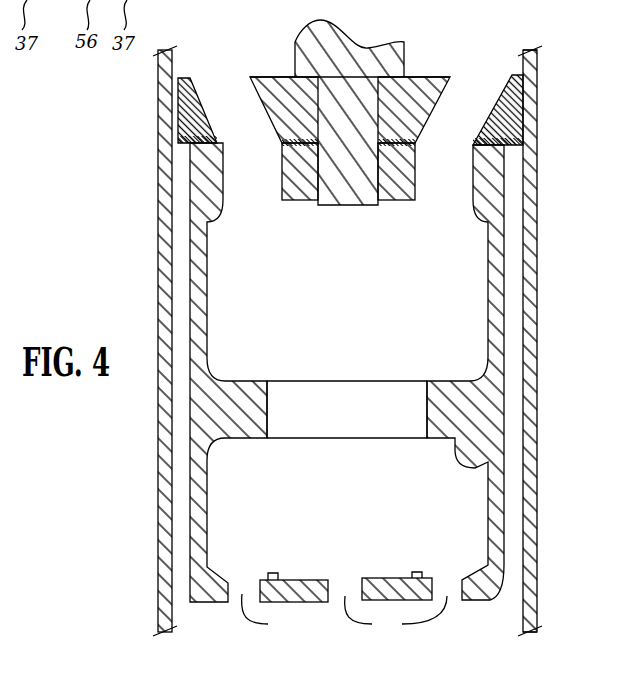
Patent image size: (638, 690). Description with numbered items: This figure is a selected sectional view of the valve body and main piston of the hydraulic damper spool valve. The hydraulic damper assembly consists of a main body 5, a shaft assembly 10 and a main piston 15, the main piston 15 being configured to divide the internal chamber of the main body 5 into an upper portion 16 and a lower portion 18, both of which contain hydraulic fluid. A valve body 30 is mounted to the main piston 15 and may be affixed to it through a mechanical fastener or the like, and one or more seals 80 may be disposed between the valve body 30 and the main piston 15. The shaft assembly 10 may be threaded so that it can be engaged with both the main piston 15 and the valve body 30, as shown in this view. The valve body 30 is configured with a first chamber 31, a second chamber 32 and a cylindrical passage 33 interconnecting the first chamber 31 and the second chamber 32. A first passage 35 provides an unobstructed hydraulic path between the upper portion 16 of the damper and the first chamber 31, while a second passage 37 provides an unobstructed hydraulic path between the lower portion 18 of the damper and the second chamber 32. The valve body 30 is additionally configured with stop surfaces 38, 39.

The main body 5 is at (533, 88).
The shaft assembly 10 is at (410, 112).
The main piston 15 is at (438, 178).
The upper portion 16 is at (485, 68).
The lower portion 18 is at (483, 617).
The valve body 30 is at (342, 388).
The first chamber 31 is at (455, 296).
The second chamber 32 is at (463, 514).
The cylindrical passage 33 is at (316, 425).
The first passage 35 is at (192, 210).
The second passage 37 is at (344, 606).
The stop surface 38 is at (235, 408).
The stop surface 39 is at (272, 575).
The seal 80 is at (290, 143).